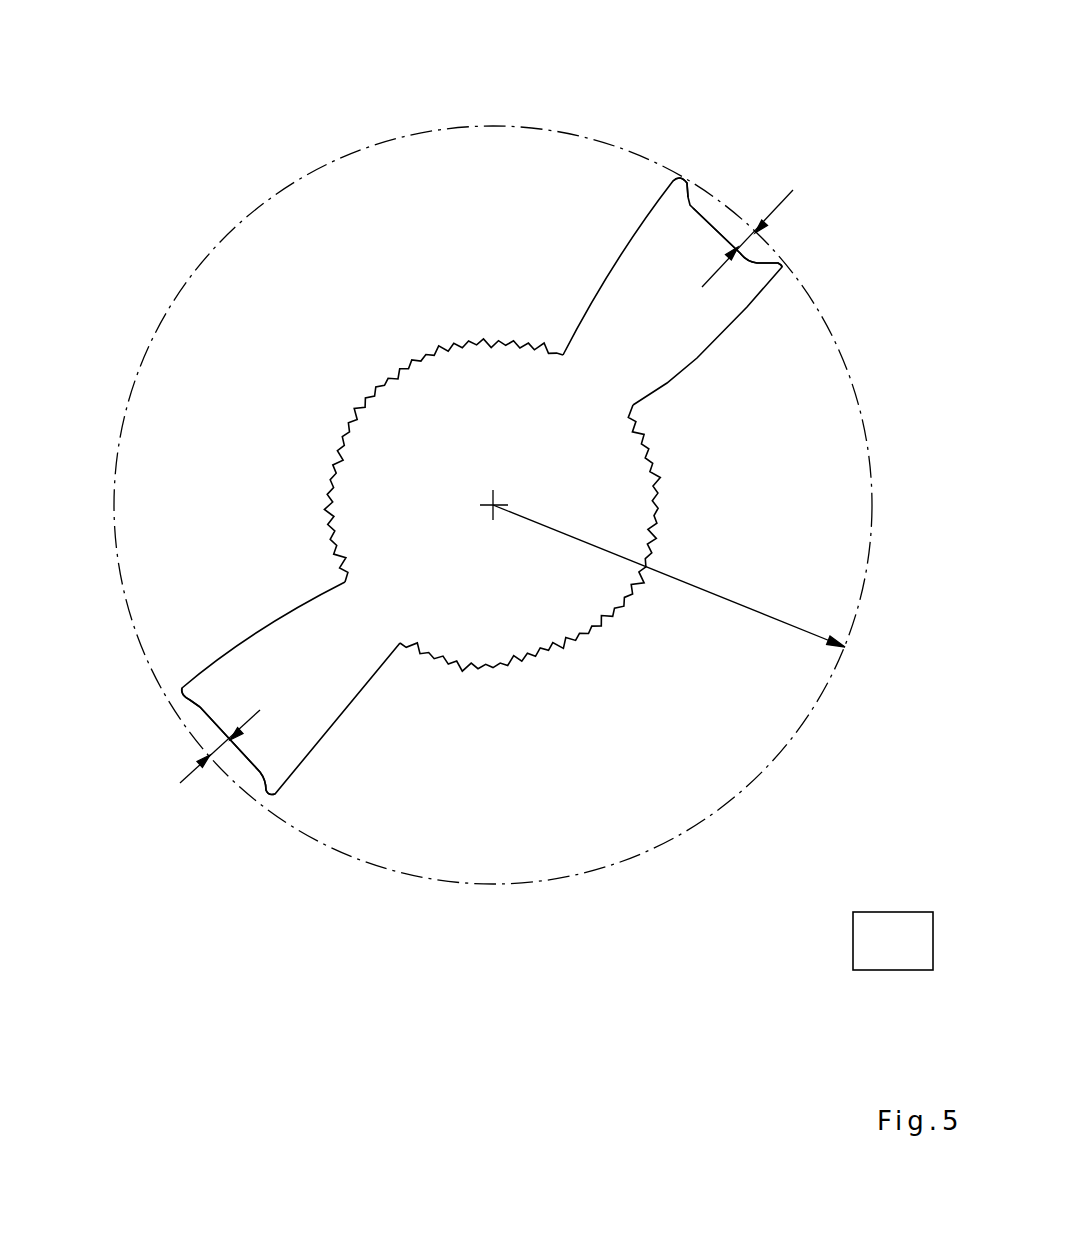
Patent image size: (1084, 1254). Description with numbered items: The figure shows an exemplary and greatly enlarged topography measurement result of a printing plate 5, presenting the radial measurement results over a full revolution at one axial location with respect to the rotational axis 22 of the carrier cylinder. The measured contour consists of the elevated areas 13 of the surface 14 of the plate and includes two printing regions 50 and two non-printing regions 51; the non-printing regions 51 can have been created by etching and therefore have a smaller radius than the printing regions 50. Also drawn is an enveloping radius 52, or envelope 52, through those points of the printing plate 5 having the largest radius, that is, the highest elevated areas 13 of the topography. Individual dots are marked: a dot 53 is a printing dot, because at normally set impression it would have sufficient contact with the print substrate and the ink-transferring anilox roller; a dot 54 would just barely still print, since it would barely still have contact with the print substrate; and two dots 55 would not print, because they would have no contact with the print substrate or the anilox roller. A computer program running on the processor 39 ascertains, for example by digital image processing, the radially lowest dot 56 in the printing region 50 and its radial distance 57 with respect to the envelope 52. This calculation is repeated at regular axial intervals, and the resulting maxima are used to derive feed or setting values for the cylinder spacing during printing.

The printing plate 5 is at (478, 403).
The elevated areas 13 is at (633, 275).
The surface 14 is at (350, 430).
The rotational axis 22 is at (493, 505).
The processor 39 is at (888, 963).
The printing regions 50 is at (675, 338).
The non-printing regions 51 is at (410, 358).
The enveloping radius 52 is at (767, 612).
The dot 53 is at (688, 200).
The dot 54 is at (782, 263).
The dots 55 is at (183, 692).
The radially lowest dot 56 is at (745, 262).
The radial distance 57 is at (780, 203).